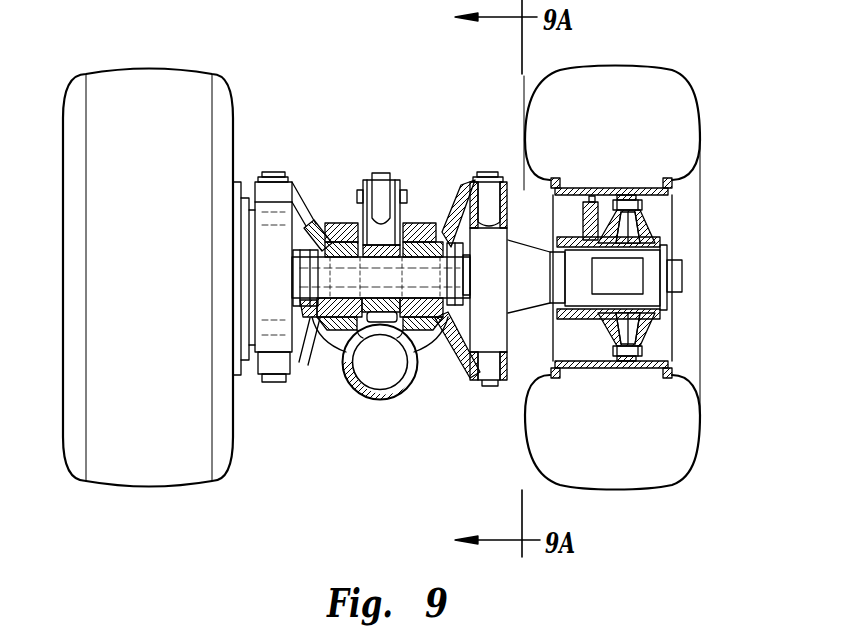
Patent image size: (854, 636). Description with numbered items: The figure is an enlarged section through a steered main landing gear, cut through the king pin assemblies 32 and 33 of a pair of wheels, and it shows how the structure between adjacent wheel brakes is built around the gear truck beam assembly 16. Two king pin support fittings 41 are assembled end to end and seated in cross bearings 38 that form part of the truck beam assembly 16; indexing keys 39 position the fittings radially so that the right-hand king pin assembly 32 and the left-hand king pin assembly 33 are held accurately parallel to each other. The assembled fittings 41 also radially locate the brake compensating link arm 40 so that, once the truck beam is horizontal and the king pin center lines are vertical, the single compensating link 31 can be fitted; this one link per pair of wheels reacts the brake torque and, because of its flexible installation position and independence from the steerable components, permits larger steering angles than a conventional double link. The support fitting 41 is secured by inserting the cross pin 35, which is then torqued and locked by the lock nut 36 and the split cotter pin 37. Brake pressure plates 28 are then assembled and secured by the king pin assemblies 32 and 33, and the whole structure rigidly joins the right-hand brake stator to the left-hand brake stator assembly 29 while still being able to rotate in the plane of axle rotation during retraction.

The gear truck beam assembly 16 is at (402, 397).
The brake pressure plate 28 is at (262, 232).
The brake stator assembly L.H. 29 is at (638, 232).
The single compensating link 31 is at (376, 178).
The king pin assembly R.H. 32 is at (490, 158).
The king pin assembly L.H. 33 is at (272, 160).
The cross pin 35 is at (342, 266).
The lock nut 36 is at (308, 368).
The split cotter pin 37 is at (293, 288).
The cross bearings 38 is at (322, 342).
The indexing keys 39 is at (422, 220).
The brake compensating link arm 40 is at (394, 180).
The king pin support fitting 41 is at (296, 180).